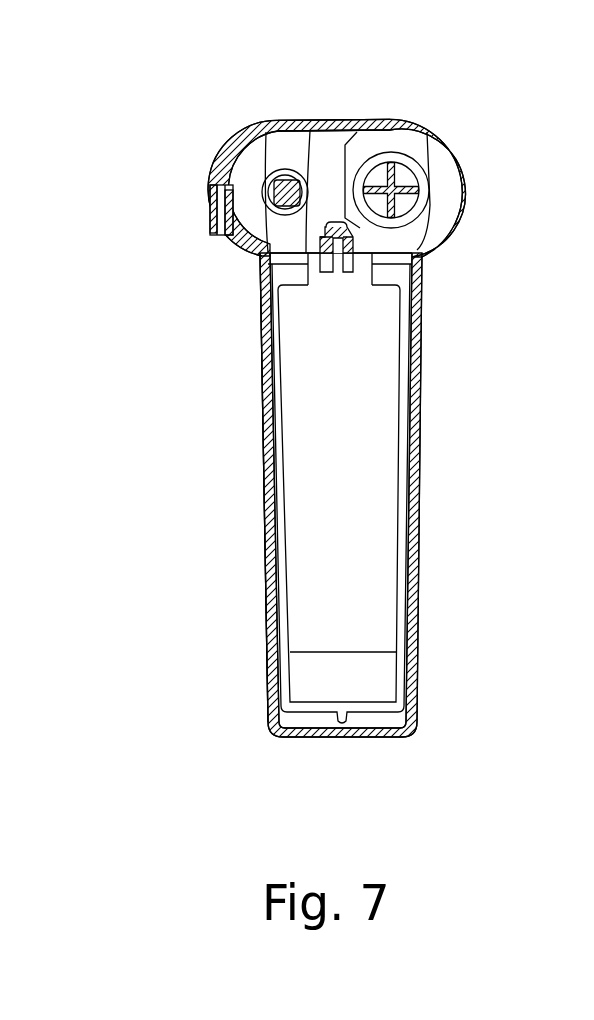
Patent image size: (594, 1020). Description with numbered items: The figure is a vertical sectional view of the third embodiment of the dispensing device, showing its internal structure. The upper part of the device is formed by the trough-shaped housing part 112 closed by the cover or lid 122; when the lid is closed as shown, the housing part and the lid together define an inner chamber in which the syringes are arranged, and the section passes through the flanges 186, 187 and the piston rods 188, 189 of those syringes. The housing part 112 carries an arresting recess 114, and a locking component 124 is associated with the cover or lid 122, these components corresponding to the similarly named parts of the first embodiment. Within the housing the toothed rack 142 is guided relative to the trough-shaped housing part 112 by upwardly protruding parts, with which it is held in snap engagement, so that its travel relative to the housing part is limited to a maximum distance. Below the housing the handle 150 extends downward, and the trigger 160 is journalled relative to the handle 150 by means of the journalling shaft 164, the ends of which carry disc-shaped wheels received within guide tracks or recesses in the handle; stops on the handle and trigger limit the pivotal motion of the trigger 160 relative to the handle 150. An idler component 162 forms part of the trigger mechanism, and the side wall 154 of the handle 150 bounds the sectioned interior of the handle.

The trough-shaped housing part 112 is at (463, 205).
The arresting recess 114 is at (225, 233).
The cover or lid 122 is at (381, 124).
The locking component 124 is at (212, 203).
The toothed rack 142 is at (352, 239).
The handle 150 is at (420, 492).
The side wall of body housing 154 is at (262, 352).
The trigger 160 is at (385, 600).
The idler component 162 is at (362, 280).
The shaft 164 is at (412, 320).
The flange 186 is at (407, 147).
The flange 187 is at (283, 143).
The piston rod 188 is at (420, 180).
The piston rod 189 is at (273, 190).